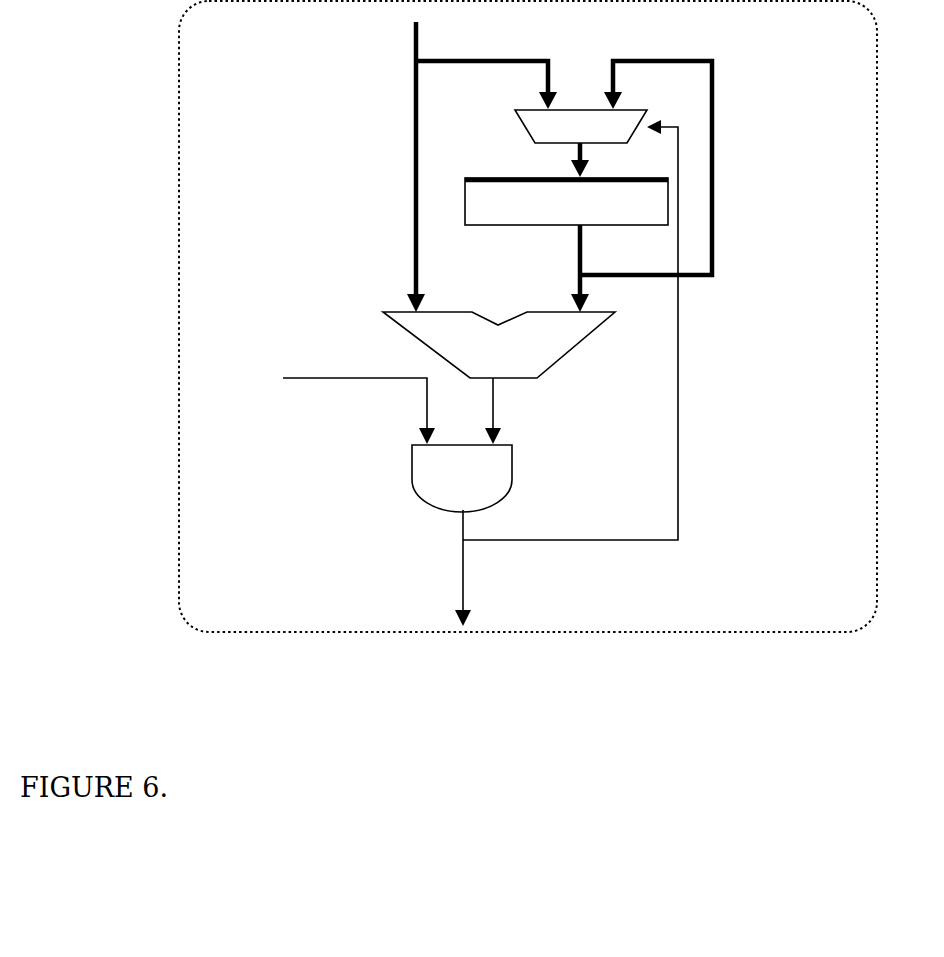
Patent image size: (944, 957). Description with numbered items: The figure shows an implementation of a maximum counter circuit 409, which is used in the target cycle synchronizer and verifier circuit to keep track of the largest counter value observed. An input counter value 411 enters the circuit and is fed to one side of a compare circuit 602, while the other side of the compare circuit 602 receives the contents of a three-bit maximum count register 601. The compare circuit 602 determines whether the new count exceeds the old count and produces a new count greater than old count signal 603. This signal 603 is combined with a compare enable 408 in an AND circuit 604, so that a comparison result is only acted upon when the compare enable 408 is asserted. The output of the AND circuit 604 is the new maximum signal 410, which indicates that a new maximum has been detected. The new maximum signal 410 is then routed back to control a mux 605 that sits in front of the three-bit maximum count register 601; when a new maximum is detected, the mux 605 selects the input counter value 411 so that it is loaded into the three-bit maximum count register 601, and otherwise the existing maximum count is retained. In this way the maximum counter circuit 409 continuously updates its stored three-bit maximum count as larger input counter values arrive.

The maximum counter circuit 409 is at (168, 228).
The input counter value 411 is at (398, 139).
The mux 605 is at (663, 105).
The three-bit maximum count register 601 is at (680, 204).
The compare circuit 602 is at (575, 358).
The new count greater than old count signal 603 is at (510, 406).
The compare enable 408 is at (406, 388).
The AND circuit 604 is at (394, 472).
The new maximum signal 410 is at (478, 557).